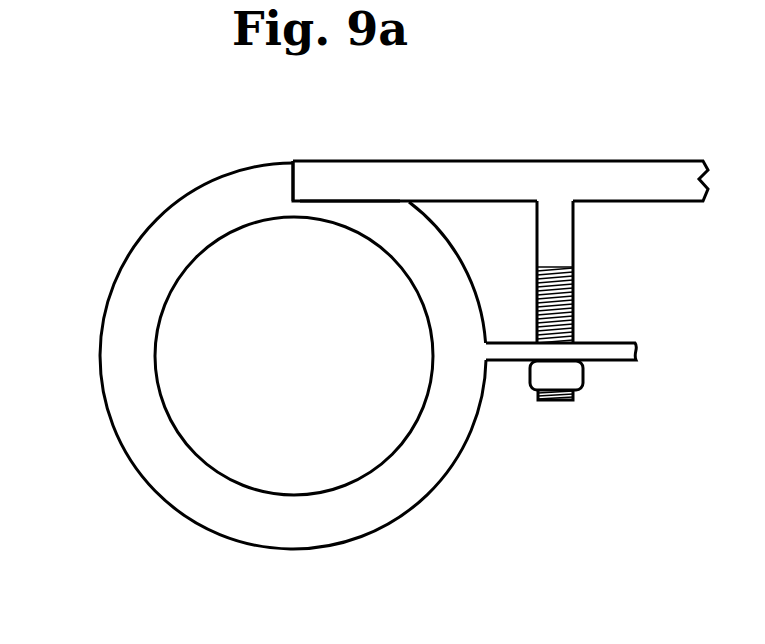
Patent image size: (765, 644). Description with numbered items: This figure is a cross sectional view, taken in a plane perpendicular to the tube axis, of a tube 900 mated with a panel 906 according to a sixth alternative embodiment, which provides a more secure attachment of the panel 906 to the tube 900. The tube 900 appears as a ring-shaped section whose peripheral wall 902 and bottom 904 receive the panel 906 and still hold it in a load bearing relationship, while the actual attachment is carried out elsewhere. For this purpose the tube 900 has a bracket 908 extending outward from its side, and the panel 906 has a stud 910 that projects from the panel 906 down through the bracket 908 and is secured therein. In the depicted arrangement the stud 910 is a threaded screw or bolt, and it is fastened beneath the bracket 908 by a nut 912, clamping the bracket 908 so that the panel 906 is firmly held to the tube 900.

The tube 900 is at (113, 232).
The peripheral wall 902 is at (298, 178).
The bottom 904 is at (355, 201).
The panel 906 is at (637, 161).
The bracket 908 is at (637, 351).
The stud 910 is at (573, 257).
The nut 912 is at (585, 375).